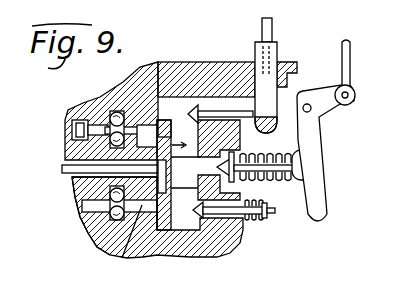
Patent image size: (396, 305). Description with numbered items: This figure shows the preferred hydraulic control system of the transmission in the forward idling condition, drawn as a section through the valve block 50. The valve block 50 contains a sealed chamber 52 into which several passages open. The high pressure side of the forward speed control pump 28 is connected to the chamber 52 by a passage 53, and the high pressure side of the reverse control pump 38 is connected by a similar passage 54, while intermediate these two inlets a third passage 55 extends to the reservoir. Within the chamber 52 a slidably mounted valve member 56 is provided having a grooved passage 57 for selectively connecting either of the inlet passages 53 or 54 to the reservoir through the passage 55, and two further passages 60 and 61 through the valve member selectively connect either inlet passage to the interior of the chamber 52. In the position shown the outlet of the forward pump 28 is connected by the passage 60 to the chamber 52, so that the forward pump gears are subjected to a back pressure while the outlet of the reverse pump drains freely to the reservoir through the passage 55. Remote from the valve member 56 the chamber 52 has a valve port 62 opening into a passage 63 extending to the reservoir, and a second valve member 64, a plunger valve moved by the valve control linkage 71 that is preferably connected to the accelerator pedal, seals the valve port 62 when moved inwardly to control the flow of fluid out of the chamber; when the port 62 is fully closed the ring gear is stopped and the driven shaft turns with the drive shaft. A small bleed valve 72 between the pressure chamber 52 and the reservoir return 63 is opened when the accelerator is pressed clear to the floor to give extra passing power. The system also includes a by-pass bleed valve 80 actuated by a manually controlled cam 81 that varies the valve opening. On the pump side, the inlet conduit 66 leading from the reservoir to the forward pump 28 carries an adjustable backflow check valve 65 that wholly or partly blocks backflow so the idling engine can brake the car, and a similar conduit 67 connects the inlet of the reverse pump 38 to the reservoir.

The forward speed control pump 28 is at (72, 147).
The reverse control pump 38 is at (84, 236).
The valve block 50 is at (186, 247).
The sealed chamber 52 is at (185, 100).
The passage 53 is at (140, 117).
The passage 54 is at (143, 224).
The third passage 55 is at (70, 177).
The slidably mounted valve member 56 is at (168, 169).
The grooved passage 57 is at (164, 184).
The passage 60 is at (183, 114).
The passage 61 is at (163, 207).
The valve port 62 is at (227, 158).
The passage 63 is at (220, 188).
The second valve member 64 is at (252, 158).
The backflow check valve 65 is at (83, 118).
The inlet conduit 66 is at (72, 129).
The conduit 67 is at (82, 205).
The valve control linkage 71 is at (330, 106).
The small bleed valve 72 is at (244, 230).
The by-pass bleed valve 80 is at (217, 97).
The manually controlled cam 81 is at (278, 112).